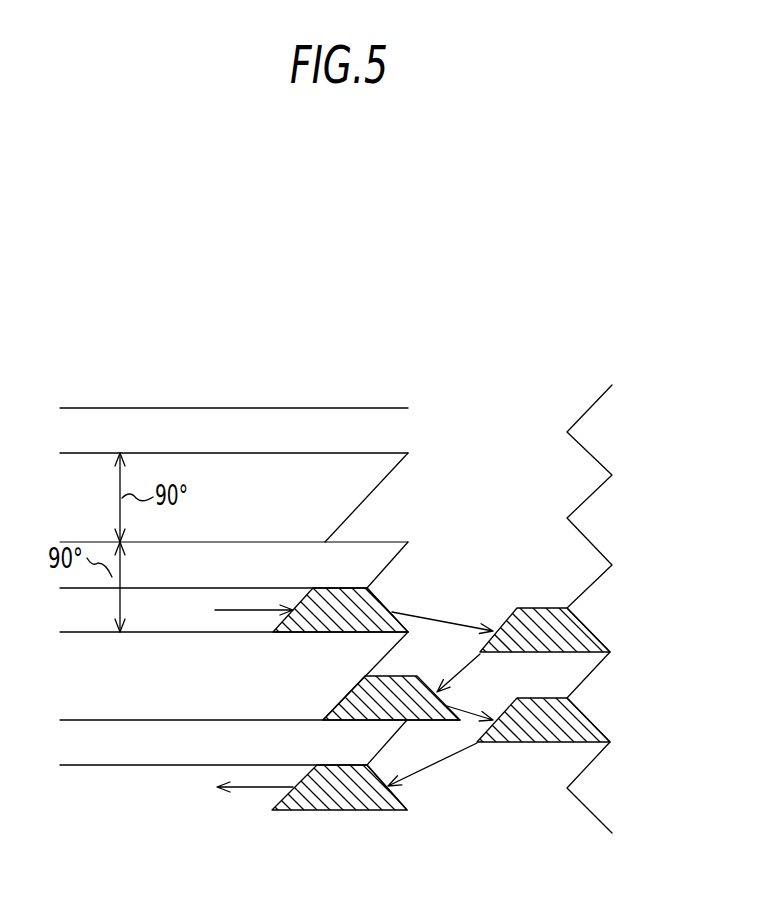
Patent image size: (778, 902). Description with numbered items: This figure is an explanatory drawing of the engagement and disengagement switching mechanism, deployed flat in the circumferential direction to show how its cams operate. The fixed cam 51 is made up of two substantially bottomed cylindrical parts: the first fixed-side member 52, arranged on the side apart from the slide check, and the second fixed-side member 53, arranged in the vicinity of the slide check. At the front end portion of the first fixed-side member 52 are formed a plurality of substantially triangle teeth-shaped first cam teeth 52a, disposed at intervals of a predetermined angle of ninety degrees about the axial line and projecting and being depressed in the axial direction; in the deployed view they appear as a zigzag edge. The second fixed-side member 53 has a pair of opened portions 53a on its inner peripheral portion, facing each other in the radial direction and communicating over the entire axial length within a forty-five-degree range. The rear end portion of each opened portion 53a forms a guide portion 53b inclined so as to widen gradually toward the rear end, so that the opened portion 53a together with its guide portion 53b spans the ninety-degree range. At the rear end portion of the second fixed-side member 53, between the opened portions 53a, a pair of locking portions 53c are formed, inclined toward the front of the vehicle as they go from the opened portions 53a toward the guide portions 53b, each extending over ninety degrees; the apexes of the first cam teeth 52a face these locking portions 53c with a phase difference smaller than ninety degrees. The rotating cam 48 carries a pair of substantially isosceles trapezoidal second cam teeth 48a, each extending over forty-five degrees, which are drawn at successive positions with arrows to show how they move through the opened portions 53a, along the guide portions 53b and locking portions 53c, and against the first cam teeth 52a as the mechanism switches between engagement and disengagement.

The fixed cam 51 is at (543, 277).
The second fixed-side member 53 is at (428, 339).
The first fixed-side member 52 is at (524, 338).
The first cam teeth 52a is at (595, 403).
The locking portions 53c is at (374, 492).
The guide portion 53b is at (390, 562).
The opened portions 53a is at (183, 632).
The second cam teeth 48a is at (323, 634).
The rotating cam 48 is at (343, 804).